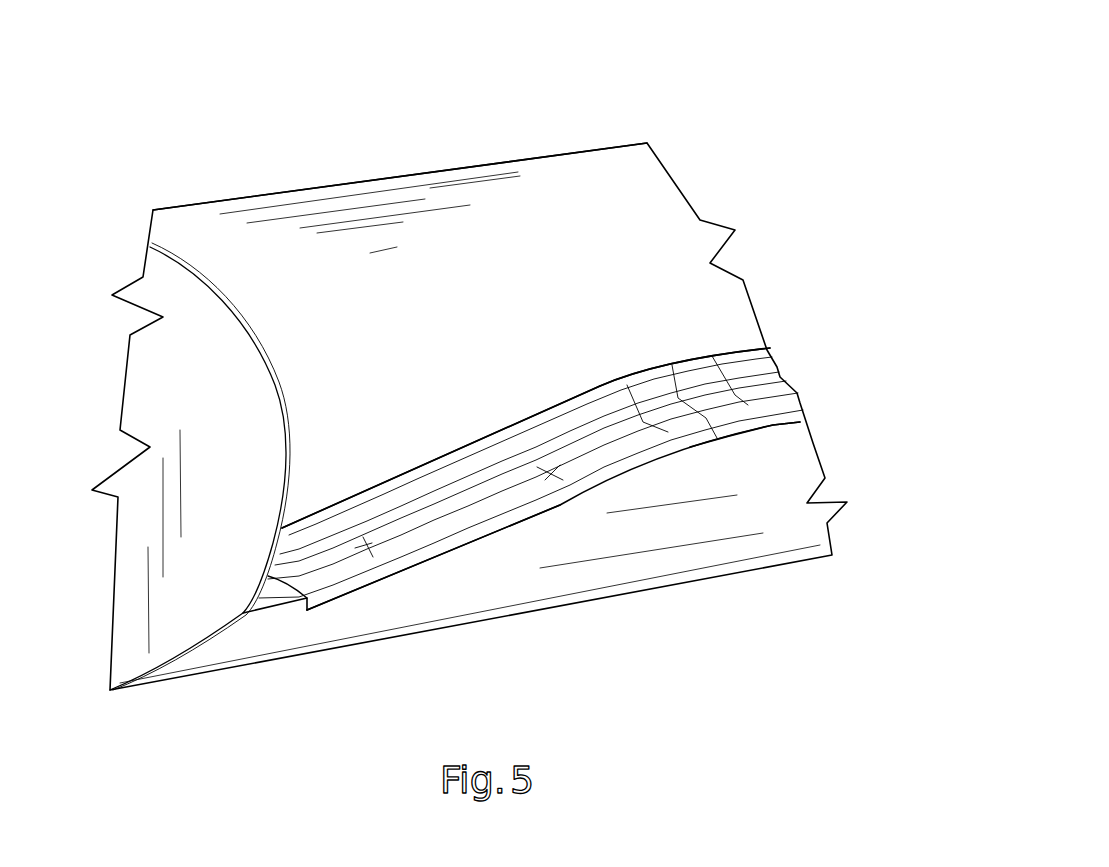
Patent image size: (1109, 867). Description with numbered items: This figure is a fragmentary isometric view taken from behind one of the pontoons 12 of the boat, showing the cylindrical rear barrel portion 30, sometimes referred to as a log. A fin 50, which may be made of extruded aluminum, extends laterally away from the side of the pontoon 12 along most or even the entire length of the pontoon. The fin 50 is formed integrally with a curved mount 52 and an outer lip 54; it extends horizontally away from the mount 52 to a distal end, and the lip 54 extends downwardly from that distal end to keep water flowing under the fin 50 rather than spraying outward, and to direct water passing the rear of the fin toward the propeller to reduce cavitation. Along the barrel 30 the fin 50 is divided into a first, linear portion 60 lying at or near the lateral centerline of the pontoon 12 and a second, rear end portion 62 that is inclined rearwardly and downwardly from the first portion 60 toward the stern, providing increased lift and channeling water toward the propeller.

The pontoon 12 is at (545, 92).
The cylindrical rear barrel portion 30 is at (650, 190).
The fin 50 is at (717, 403).
The curved mount 52 is at (563, 430).
The outer lip 54 is at (625, 470).
The first portion 60 is at (797, 428).
The second portion 62 is at (435, 483).